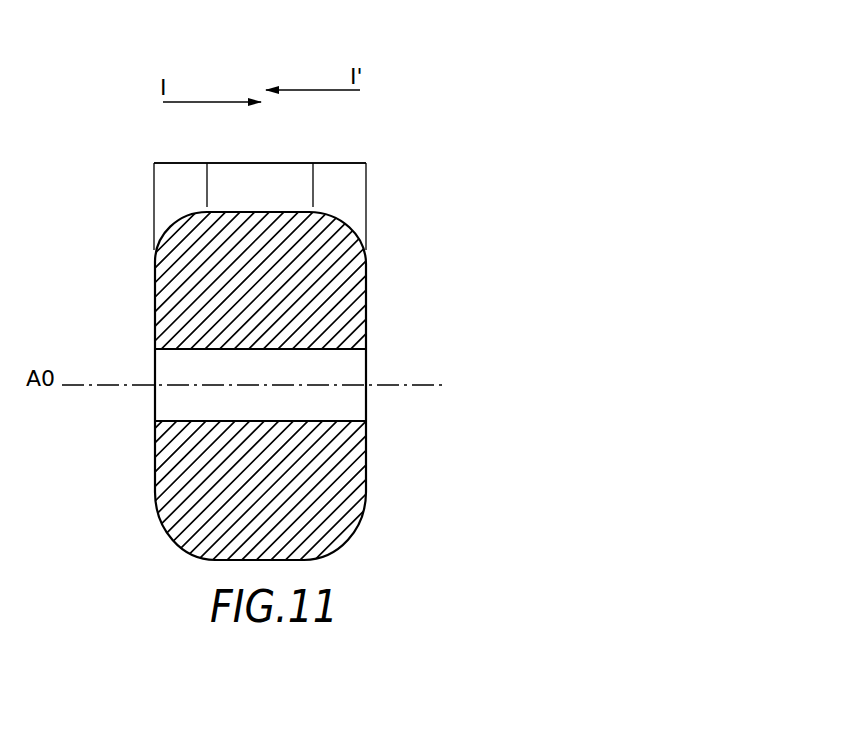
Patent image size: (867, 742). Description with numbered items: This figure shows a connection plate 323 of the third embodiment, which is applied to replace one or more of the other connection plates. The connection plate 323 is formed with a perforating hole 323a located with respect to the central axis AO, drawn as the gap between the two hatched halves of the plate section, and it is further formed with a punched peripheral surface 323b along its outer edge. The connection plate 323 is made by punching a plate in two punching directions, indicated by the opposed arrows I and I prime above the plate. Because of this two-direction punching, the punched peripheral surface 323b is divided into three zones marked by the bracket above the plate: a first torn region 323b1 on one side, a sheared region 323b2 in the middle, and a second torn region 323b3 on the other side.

The connection plate 323 is at (480, 167).
The perforating hole 323a is at (347, 413).
The punched peripheral surface 323b is at (372, 116).
The first torn region 323b1 is at (169, 168).
The sheared region 323b2 is at (260, 168).
The second torn region 323b3 is at (354, 146).